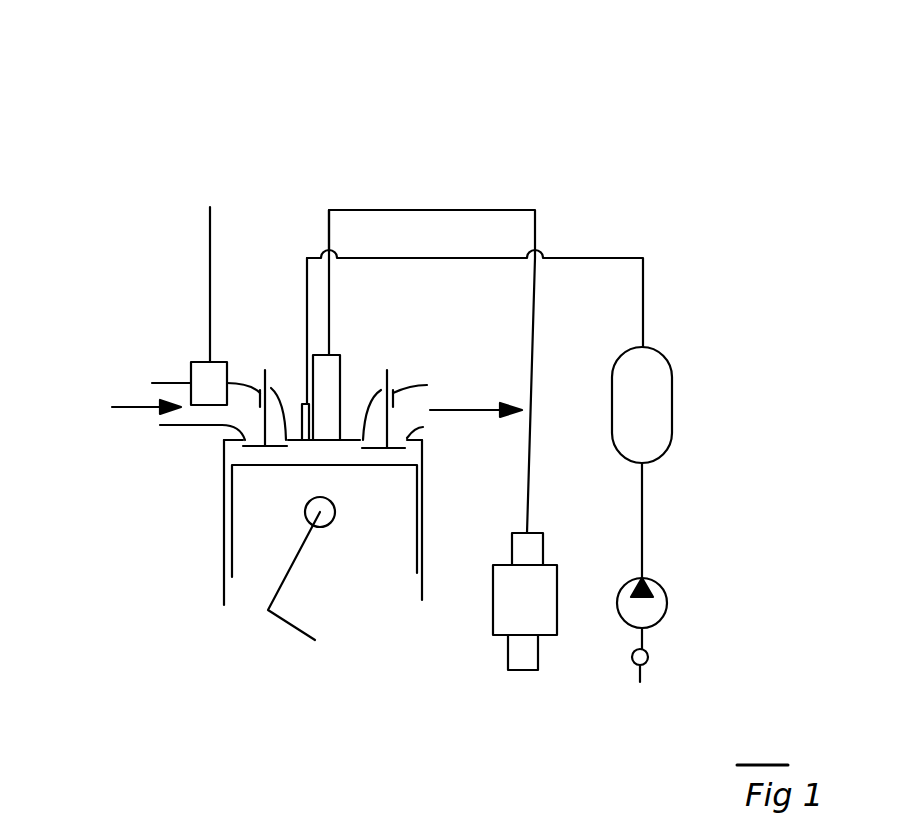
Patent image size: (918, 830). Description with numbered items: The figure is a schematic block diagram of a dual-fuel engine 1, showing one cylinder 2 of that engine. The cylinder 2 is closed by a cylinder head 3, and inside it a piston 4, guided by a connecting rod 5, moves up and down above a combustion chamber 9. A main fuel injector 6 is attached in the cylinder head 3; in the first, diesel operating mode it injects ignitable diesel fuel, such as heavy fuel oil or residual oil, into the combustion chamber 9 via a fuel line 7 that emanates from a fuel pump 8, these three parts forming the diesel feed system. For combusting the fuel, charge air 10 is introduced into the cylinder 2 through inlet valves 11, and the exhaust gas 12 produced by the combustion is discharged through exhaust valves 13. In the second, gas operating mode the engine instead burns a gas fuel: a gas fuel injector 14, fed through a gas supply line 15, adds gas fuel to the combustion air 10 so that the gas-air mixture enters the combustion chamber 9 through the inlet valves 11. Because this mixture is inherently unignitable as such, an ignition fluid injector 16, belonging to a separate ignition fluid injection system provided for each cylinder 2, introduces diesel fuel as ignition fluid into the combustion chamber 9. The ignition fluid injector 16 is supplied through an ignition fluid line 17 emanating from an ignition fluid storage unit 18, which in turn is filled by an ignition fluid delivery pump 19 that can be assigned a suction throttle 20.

The dual-fuel engine 1 is at (575, 63).
The cylinder 2 is at (214, 545).
The cylinder head 3 is at (258, 336).
The piston 4 is at (280, 550).
The connecting rod 5 is at (283, 573).
The main fuel injector 6 is at (327, 392).
The fuel line 7 is at (358, 210).
The fuel pump 8 is at (530, 625).
The combustion chamber 9 is at (272, 455).
The charge air 10 is at (130, 402).
The inlet valves 11 is at (227, 439).
The exhaust gas 12 is at (457, 406).
The exhaust valves 13 is at (387, 417).
The gas fuel injector 14 is at (199, 375).
The gas supply line 15 is at (210, 267).
The ignition fluid injector 16 is at (297, 410).
The ignition fluid line 17 is at (437, 263).
The ignition fluid storage unit 18 is at (657, 381).
The ignition fluid delivery pump 19 is at (648, 617).
The suction throttle 20 is at (630, 653).